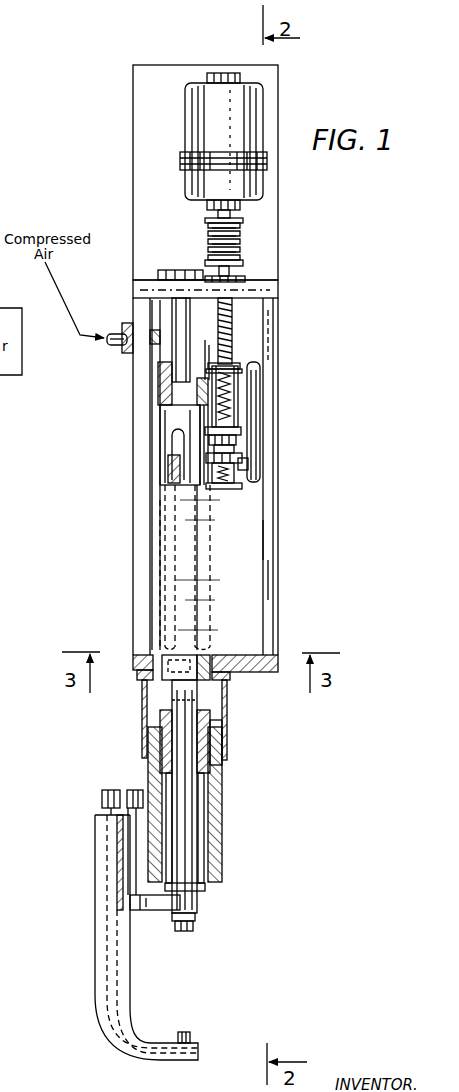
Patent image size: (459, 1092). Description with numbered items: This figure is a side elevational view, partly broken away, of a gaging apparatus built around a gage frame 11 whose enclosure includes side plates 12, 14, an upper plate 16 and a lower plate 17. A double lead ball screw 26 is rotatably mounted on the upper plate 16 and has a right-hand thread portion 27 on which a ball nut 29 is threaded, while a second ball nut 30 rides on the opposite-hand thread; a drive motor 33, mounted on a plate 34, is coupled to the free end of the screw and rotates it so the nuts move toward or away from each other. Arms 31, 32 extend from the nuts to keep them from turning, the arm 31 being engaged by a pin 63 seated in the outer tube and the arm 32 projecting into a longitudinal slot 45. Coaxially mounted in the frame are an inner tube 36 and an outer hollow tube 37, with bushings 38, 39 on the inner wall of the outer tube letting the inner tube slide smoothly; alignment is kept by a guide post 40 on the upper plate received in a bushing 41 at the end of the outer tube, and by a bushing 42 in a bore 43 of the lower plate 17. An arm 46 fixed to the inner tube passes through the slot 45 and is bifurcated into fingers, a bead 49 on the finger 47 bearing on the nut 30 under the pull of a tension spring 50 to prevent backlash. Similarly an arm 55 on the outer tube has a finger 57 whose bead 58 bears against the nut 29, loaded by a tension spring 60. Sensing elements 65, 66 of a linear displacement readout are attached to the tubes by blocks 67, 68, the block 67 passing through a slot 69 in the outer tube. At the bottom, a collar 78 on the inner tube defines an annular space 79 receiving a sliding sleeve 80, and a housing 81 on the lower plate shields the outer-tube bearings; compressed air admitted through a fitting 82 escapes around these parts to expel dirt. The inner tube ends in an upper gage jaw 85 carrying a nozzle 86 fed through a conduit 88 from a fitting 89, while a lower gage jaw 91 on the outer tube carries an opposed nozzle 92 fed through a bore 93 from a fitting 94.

The gage frame 11 is at (281, 622).
The side plate 12 is at (150, 508).
The side plate 14 is at (280, 593).
The upper plate 16 is at (255, 282).
The lower plate 17 is at (146, 668).
The double lead ball screw 26 is at (232, 268).
The right-hand thread portion 27 is at (240, 313).
The ball nut 29 is at (243, 372).
The ball nut 30 is at (240, 478).
The arm 31 is at (224, 350).
The arm 32 is at (210, 470).
The drive motor 33 is at (183, 118).
The plate 34 is at (278, 75).
The inner tube 36 is at (170, 740).
The outer hollow tube 37 is at (160, 700).
The bushing 38 is at (198, 888).
The bushing 39 is at (160, 655).
The guide post 40 is at (176, 316).
The bushing 41 is at (170, 372).
The bushing 42 is at (250, 673).
The bore 43 is at (212, 655).
The longitudinal slot 45 is at (205, 540).
The arm 46 is at (176, 452).
The finger 47 is at (243, 462).
The bead 49 is at (250, 468).
The tension spring 50 is at (238, 488).
The arm 55 is at (200, 432).
The finger 57 is at (243, 452).
The bead 58 is at (240, 428).
The tension spring 60 is at (232, 393).
The pin 63 is at (207, 365).
The sensing element 65 is at (238, 438).
The sensing element 66 is at (252, 540).
The block 67 is at (170, 468).
The block 68 is at (162, 562).
The slot 69 is at (171, 442).
The collar 78 is at (224, 806).
The annular space 79 is at (205, 780).
The sleeve 80 is at (206, 888).
The housing 81 is at (228, 737).
The fitting 82 is at (116, 344).
The upper gage jaw 85 is at (200, 925).
The nozzle 86 is at (180, 933).
The conduit 88 is at (158, 912).
The fitting 89 is at (134, 790).
The lower gage jaw 91 is at (140, 1012).
The nozzle 92 is at (191, 1036).
The bore 93 is at (120, 1040).
The fitting 94 is at (108, 790).